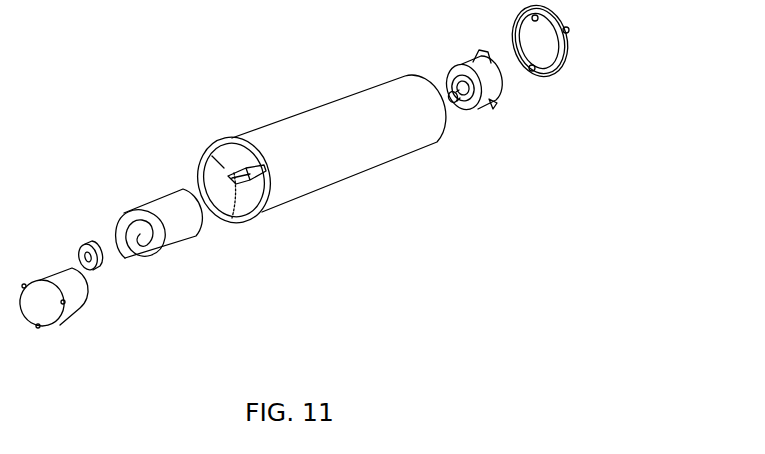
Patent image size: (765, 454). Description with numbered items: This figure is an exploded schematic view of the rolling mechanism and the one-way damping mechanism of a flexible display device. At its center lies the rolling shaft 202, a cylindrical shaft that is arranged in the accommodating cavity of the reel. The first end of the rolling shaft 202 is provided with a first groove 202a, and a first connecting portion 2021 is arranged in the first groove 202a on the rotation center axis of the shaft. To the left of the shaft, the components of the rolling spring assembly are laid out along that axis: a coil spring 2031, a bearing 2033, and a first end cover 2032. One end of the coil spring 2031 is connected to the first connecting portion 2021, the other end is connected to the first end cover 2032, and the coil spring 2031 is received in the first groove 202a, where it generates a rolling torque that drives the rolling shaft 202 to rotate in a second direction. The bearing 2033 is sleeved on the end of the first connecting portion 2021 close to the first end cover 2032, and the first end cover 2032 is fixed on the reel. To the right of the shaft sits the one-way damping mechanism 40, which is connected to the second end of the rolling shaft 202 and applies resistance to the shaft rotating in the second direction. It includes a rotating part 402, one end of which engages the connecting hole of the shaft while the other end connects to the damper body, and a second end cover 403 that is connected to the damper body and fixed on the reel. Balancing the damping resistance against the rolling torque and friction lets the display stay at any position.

The rolling shaft 202 is at (305, 128).
The first groove 202a is at (222, 170).
The first connecting portion 2021 is at (235, 207).
The one-way damping mechanism 40 is at (473, 63).
The rotating part 402 is at (453, 103).
The second end cover 403 is at (531, 44).
The bearing 2033 is at (92, 233).
The coil spring 2031 is at (174, 222).
The first end cover 2032 is at (75, 290).